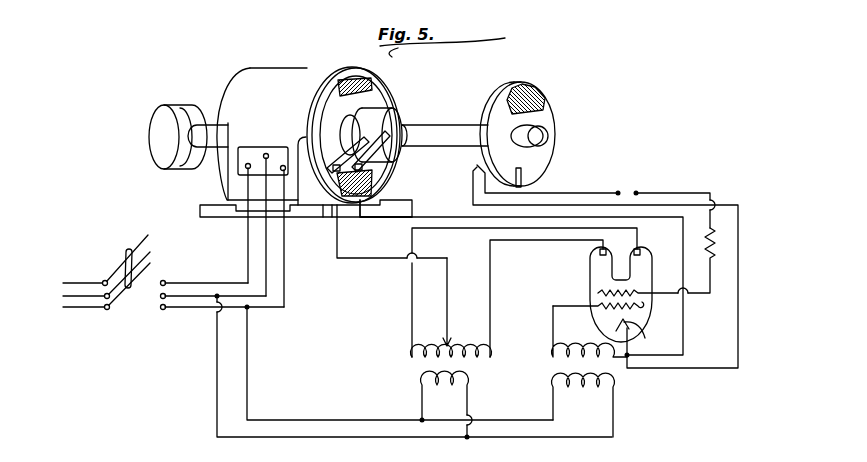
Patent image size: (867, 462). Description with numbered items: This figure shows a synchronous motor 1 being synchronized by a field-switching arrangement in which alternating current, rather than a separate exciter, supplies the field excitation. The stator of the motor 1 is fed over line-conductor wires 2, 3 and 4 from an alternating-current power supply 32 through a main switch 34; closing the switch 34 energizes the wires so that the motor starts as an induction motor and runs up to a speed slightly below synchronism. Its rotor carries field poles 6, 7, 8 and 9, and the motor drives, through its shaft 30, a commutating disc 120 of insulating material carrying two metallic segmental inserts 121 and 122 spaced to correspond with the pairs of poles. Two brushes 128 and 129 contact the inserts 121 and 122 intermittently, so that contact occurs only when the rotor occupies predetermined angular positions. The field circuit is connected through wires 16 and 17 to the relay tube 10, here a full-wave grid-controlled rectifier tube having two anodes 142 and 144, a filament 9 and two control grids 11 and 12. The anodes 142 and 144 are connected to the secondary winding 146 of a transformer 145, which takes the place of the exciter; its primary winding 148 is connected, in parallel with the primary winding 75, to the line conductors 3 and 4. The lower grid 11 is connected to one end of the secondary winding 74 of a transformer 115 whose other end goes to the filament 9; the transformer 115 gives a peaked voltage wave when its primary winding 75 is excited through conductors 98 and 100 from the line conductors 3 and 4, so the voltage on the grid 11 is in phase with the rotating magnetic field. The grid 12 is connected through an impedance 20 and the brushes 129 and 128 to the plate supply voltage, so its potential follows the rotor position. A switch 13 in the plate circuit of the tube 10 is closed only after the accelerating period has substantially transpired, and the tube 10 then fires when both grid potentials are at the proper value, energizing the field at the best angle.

The synchronous motor 1 is at (258, 78).
The line-conductor wire 2 is at (182, 282).
The line-conductor wire 3 is at (192, 295).
The line-conductor wire 4 is at (190, 308).
The field pole 6 is at (373, 97).
The field pole 7 is at (380, 170).
The field pole 8 is at (327, 165).
The field pole 9 is at (333, 92).
The relay tube 10 is at (590, 270).
The lower control grid 11 is at (642, 306).
The control grid 12 is at (635, 290).
The switch 13 is at (618, 193).
The wire 16 is at (335, 249).
The wire 17 is at (396, 218).
The impedance 20 is at (715, 250).
The shaft 30 is at (440, 127).
The alternating-current supply of power 32 is at (60, 290).
The main switch 34 is at (126, 246).
The secondary winding 74 is at (588, 320).
The primary winding 75 is at (608, 400).
The conductor 98 is at (282, 419).
The conductor 100 is at (291, 437).
The transformer 115 is at (603, 368).
The commutating disc 120 is at (543, 112).
The metallic segmental insert 121 is at (518, 83).
The metallic segmental insert 122 is at (521, 172).
The brush 128 is at (477, 165).
The brush 129 is at (527, 192).
The anode 142 is at (637, 256).
The anode 144 is at (598, 254).
The transformer 145 is at (478, 372).
The secondary winding 146 is at (410, 349).
The primary winding 148 is at (430, 390).